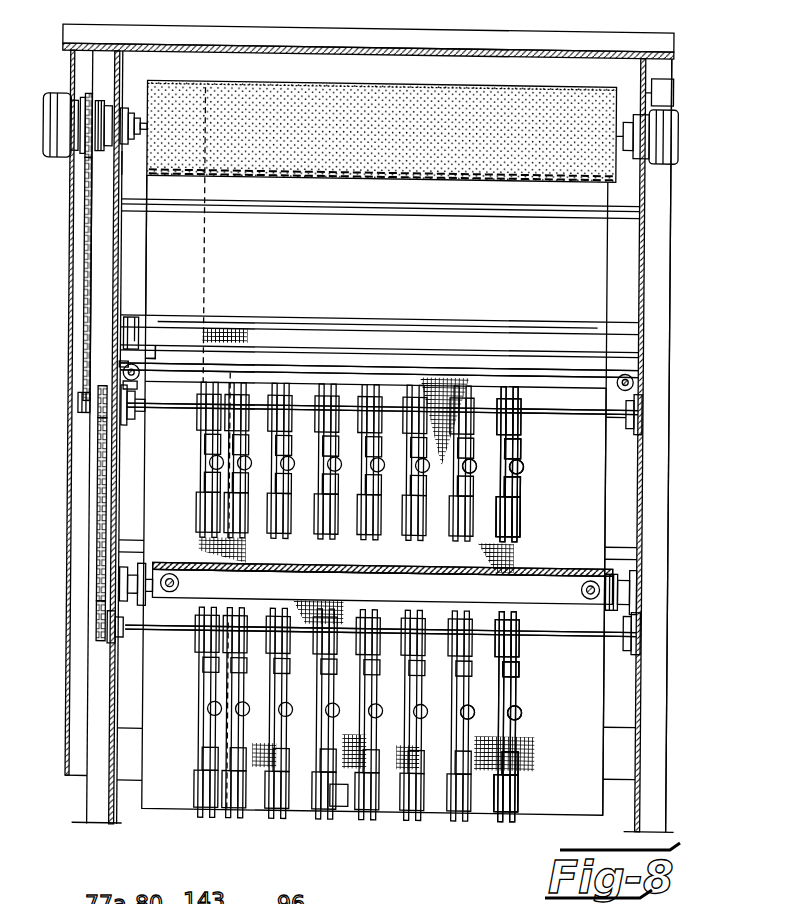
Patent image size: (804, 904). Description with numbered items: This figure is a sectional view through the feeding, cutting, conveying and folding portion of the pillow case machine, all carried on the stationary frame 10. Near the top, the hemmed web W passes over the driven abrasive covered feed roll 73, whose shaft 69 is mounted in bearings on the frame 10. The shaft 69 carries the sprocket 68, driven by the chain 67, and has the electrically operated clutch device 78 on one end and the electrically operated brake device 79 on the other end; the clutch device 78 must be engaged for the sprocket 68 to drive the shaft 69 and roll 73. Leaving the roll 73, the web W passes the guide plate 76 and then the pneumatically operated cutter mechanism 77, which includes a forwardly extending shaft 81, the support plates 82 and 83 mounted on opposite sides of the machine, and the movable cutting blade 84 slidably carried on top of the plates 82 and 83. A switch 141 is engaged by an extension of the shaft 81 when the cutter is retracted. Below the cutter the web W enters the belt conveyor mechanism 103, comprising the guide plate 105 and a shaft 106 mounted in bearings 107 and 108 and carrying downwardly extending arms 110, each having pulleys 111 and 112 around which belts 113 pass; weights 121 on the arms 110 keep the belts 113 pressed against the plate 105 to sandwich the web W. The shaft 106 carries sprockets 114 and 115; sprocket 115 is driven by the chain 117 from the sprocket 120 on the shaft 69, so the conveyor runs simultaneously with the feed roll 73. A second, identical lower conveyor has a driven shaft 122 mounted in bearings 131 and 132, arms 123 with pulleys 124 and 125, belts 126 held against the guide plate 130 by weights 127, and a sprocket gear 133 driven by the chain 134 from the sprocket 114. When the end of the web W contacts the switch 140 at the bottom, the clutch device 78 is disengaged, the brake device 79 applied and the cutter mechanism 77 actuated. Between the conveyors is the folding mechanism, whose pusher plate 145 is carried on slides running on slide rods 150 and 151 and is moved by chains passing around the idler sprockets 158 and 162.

The stationary frame 10 is at (668, 372).
The chain 67 is at (98, 92).
The sprocket 68 is at (124, 152).
The shaft 69 is at (146, 118).
The abrasive covered feed roll 73 is at (548, 96).
The guide plate 76 is at (560, 261).
The cutter mechanism 77 is at (402, 358).
The clutch device 78 is at (45, 135).
The brake device 79 is at (677, 126).
The forwardly extending shaft 81 is at (142, 376).
The support plate 82 is at (122, 368).
The support plate 83 is at (637, 384).
The movable cutting blade 84 is at (180, 372).
The belt conveyor mechanism 103 is at (535, 493).
The guide plate 105 is at (600, 548).
The shaft 106 is at (580, 412).
The bearing 107 is at (126, 418).
The bearing 108 is at (625, 430).
The arms 110 is at (515, 446).
The pulleys 111 is at (515, 392).
The pulleys 112 is at (516, 520).
The belts 113 is at (517, 480).
The sprocket 114 is at (100, 386).
The sprocket 115 is at (82, 404).
The chain 117 is at (86, 282).
The sprocket 120 is at (80, 157).
The weights 121 is at (512, 458).
The driven shaft 122 is at (580, 630).
The arms 123 is at (513, 686).
The pulleys 124 is at (512, 628).
The pulleys 125 is at (514, 798).
The belts 126 is at (513, 740).
The weights 127 is at (512, 712).
The guide plate 130 is at (596, 793).
The bearing 131 is at (128, 642).
The bearing 132 is at (625, 650).
The sprocket gear 133 is at (98, 622).
The chain 134 is at (100, 502).
The switch 140 is at (342, 802).
The switch 141 is at (145, 330).
The pusher plate 145 is at (414, 566).
The slide rod 150 is at (183, 583).
The slide rod 151 is at (582, 588).
The idler sprocket 158 is at (145, 582).
The idler sprocket 162 is at (632, 592).
The web of textile material W is at (372, 84).